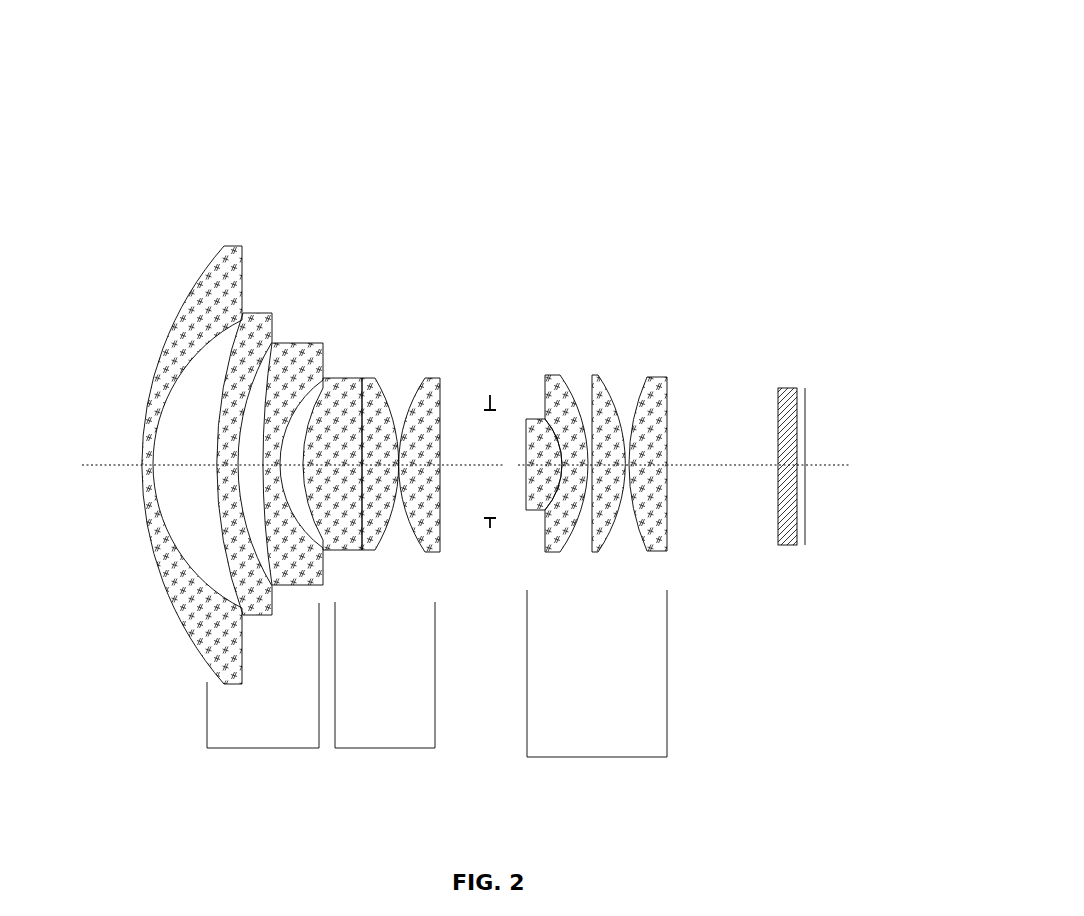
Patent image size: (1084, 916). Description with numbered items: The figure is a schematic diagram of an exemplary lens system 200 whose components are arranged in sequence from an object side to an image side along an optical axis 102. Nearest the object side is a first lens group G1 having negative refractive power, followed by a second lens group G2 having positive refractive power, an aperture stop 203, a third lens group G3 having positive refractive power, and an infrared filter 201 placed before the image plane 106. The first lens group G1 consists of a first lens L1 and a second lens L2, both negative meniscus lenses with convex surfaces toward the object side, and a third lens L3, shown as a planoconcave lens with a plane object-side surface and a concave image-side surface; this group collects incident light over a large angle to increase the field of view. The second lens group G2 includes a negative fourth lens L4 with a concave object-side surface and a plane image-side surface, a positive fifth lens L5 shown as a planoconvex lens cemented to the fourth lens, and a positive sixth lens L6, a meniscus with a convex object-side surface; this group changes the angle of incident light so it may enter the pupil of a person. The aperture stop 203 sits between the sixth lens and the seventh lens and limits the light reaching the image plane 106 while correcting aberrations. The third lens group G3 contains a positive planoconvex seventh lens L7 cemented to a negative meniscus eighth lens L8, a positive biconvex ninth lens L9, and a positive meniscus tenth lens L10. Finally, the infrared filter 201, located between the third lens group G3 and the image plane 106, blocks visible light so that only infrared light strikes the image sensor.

The lens system 200 is at (942, 54).
The optical axis 102 is at (118, 465).
The first lens L1 is at (218, 295).
The second lens L2 is at (261, 332).
The third lens L3 is at (303, 372).
The fourth lens L4 is at (342, 392).
The fifth lens L5 is at (370, 394).
The sixth lens L6 is at (433, 394).
The seventh lens L7 is at (533, 435).
The eighth lens L8 is at (567, 399).
The ninth lens L9 is at (601, 390).
The tenth lens L10 is at (655, 397).
The aperture stop 203 is at (490, 530).
The infrared filter 201 is at (784, 395).
The image plane 106 is at (805, 388).
The first lens group G1 is at (263, 694).
The second lens group G2 is at (385, 693).
The third lens group G3 is at (597, 694).